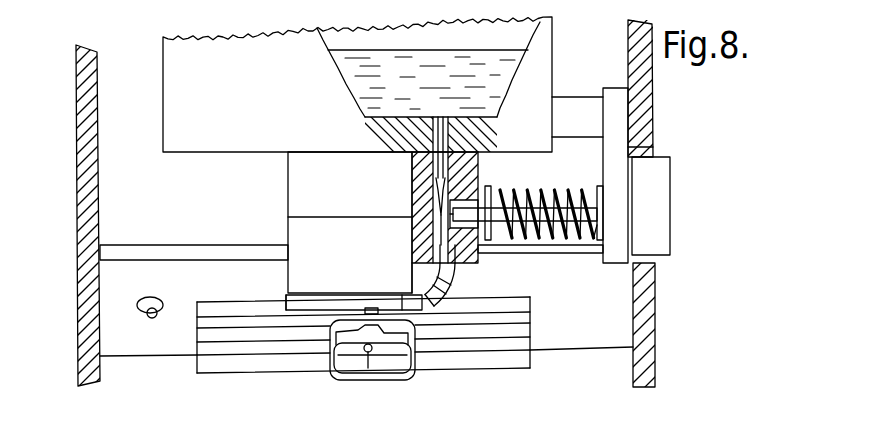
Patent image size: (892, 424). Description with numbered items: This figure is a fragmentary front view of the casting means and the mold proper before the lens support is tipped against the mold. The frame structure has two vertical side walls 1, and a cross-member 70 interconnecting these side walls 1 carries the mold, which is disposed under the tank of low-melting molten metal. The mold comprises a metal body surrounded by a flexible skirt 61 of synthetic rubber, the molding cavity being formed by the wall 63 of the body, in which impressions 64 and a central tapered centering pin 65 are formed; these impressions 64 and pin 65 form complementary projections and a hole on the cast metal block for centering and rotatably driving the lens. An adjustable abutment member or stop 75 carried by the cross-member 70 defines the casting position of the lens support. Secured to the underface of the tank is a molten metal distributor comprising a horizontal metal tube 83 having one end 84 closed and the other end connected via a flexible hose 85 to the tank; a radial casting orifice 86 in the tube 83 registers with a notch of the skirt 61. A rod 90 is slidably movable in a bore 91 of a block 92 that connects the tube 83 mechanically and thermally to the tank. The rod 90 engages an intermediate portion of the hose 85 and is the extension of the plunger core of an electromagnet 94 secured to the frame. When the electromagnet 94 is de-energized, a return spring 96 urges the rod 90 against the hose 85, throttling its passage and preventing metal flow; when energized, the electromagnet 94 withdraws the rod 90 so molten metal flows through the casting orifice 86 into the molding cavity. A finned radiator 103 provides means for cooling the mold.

The vertical side wall 1 is at (80, 99).
The flexible skirt 61 is at (343, 375).
The wall of body 63 is at (353, 365).
The impressions 64 is at (388, 363).
The central tapered centering pin 65 is at (366, 343).
The cross-member 70 is at (213, 252).
The adjustable abutment member or stop 75 is at (163, 318).
The horizontal metal tube 83 is at (342, 304).
The closed end 84 is at (292, 298).
The flexible hose 85 is at (449, 266).
The casting orifice 86 is at (380, 310).
The rod 90 is at (480, 224).
The bore 91 is at (472, 193).
The block 92 is at (313, 196).
The electromagnet 94 is at (665, 221).
The return spring 96 is at (541, 195).
The finned radiator 103 is at (507, 350).